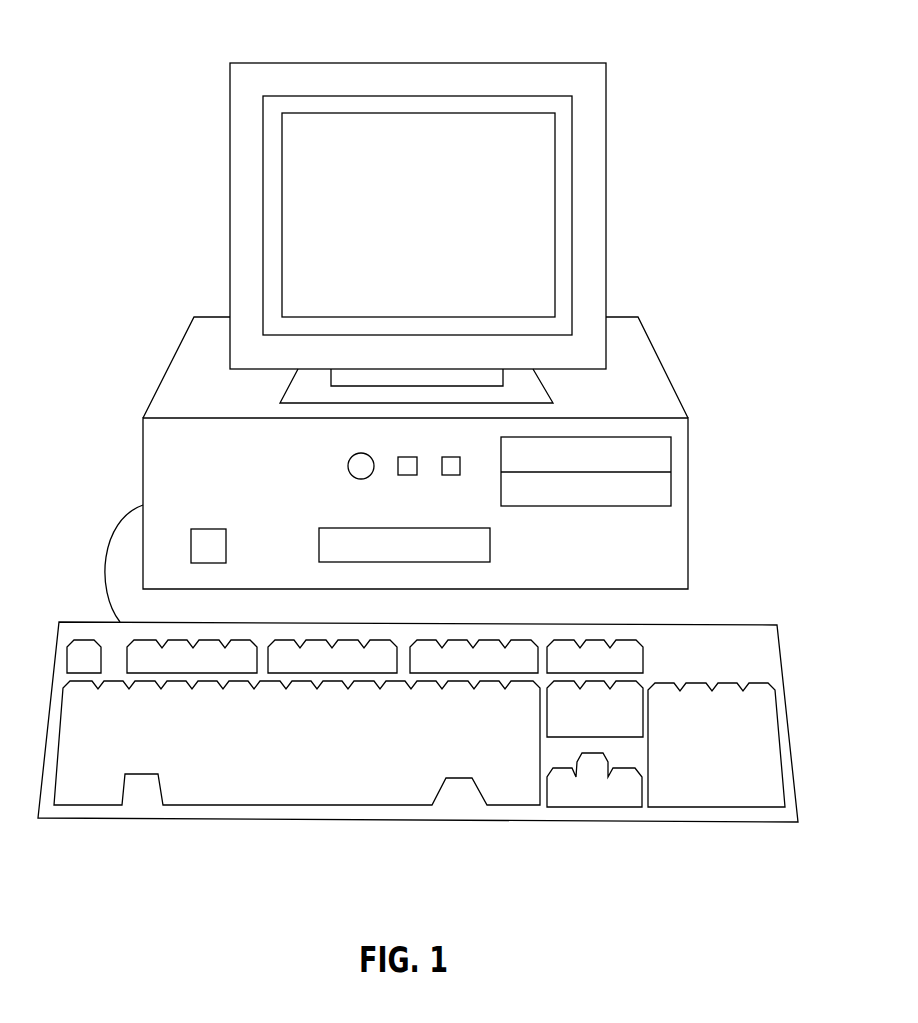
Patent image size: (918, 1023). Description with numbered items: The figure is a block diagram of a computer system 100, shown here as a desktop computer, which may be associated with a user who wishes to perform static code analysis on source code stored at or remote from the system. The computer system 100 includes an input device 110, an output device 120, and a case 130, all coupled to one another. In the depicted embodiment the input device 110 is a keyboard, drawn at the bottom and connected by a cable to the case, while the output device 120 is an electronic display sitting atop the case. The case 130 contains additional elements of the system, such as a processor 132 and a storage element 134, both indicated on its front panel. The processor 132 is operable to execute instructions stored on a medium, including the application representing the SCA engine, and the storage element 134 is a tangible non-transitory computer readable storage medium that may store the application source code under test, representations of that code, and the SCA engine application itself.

The computer system 100 is at (773, 53).
The input device 110 is at (797, 810).
The output device 120 is at (606, 246).
The case 130 is at (688, 558).
The processor 132 is at (226, 544).
The storage element 134 is at (490, 545).